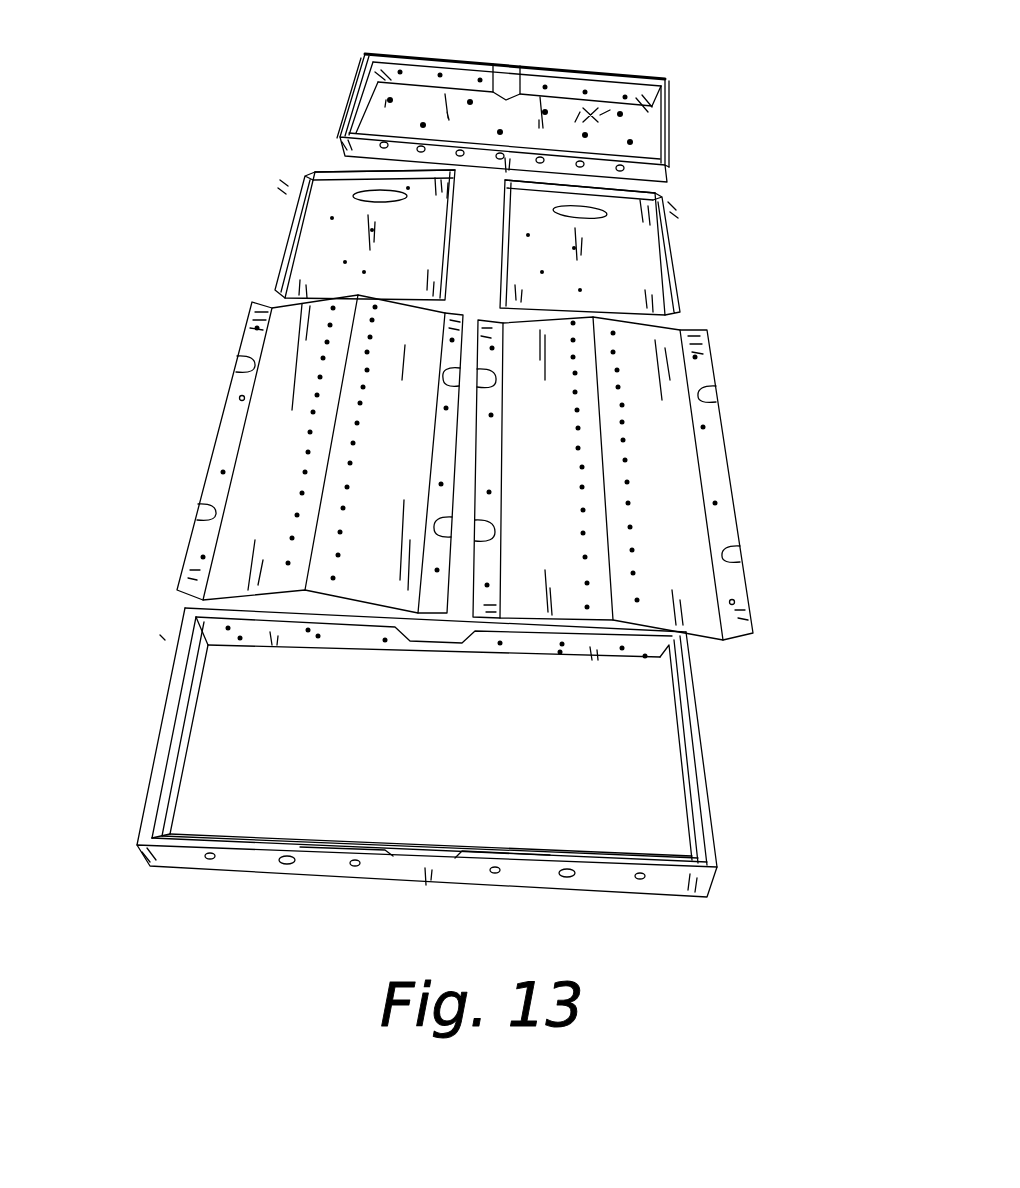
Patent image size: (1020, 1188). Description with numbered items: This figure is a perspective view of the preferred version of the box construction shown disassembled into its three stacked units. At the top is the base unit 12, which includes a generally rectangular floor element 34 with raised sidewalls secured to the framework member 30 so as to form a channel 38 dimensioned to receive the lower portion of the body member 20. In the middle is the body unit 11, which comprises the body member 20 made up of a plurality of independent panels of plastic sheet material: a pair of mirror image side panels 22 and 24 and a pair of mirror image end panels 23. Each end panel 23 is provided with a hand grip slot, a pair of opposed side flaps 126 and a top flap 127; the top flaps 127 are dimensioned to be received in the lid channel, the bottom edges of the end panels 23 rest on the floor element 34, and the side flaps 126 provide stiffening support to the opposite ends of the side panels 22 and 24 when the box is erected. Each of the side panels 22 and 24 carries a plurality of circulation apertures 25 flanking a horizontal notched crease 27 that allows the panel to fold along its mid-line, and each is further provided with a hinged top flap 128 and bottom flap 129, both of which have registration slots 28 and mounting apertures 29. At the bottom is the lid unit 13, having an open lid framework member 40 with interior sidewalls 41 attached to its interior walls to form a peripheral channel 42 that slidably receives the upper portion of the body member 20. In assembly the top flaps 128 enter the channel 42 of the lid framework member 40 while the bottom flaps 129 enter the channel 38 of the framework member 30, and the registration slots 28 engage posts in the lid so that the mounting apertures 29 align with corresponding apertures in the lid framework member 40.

The base unit 12 is at (338, 95).
The framework member 30 is at (672, 111).
The channel 38 is at (413, 52).
The floor element 34 is at (492, 112).
The body unit 11 is at (218, 300).
The side flaps 126 is at (300, 222).
The top flap 127 is at (328, 168).
The end panels 23 is at (388, 262).
The body member 20 is at (750, 222).
The side panel 24 is at (282, 455).
The side panel 22 is at (549, 465).
The top flaps 128 is at (222, 448).
The registration slots 28 is at (208, 512).
The mounting apertures 29 is at (240, 397).
The bottom flaps 129 is at (440, 548).
The circulation apertures 25 is at (362, 410).
The notched crease 27 is at (332, 504).
The lid unit 13 is at (140, 720).
The lid framework member 40 is at (710, 776).
The interior sidewalls 41 is at (337, 648).
The peripheral channel 42 is at (700, 700).